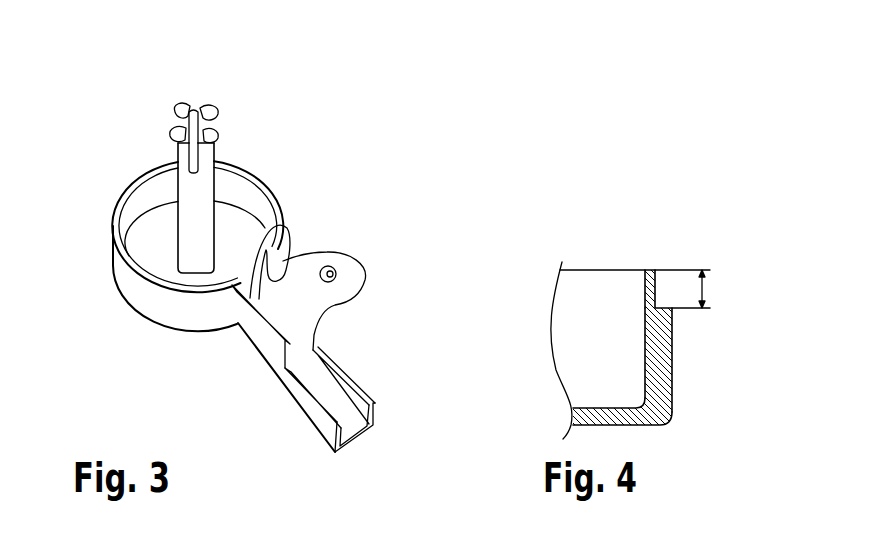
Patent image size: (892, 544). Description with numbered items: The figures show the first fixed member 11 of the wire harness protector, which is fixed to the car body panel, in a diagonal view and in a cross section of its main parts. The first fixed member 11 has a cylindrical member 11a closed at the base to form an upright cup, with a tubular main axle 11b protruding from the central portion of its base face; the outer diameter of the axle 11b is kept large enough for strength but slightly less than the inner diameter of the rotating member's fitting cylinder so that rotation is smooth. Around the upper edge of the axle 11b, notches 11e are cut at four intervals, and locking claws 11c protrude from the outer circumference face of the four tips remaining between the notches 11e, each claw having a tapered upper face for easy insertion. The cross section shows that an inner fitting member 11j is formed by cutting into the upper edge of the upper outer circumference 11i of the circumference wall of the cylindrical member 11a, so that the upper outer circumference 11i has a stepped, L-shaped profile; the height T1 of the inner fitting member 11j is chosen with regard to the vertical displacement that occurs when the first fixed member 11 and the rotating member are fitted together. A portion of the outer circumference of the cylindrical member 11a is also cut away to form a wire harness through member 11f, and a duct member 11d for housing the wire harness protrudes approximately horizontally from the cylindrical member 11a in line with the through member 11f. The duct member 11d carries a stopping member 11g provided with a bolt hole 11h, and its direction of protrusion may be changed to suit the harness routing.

In FIG. 3, the first fixed member 11 is at (240, 336).
In FIG. 3, the cylindrical member 11a is at (136, 289).
In FIG. 4, the cylindrical member 11a is at (660, 373).
In FIG. 3, the tubular main axle 11b is at (203, 188).
In FIG. 3, the locking claw 11c is at (222, 137).
In FIG. 3, the duct member 11d is at (308, 418).
In FIG. 3, the notch 11e is at (196, 112).
In FIG. 3, the wire harness through member 11f is at (265, 230).
In FIG. 3, the stopping member 11g is at (317, 302).
In FIG. 3, the bolt hole 11h is at (336, 272).
In FIG. 3, the upper outer circumference 11i is at (113, 217).
In FIG. 4, the upper outer circumference 11i is at (657, 312).
In FIG. 3, the inner fitting member 11j is at (150, 164).
In FIG. 4, the inner fitting member 11j is at (647, 270).
In FIG. 4, the height of the inner fitting member T1 is at (708, 291).